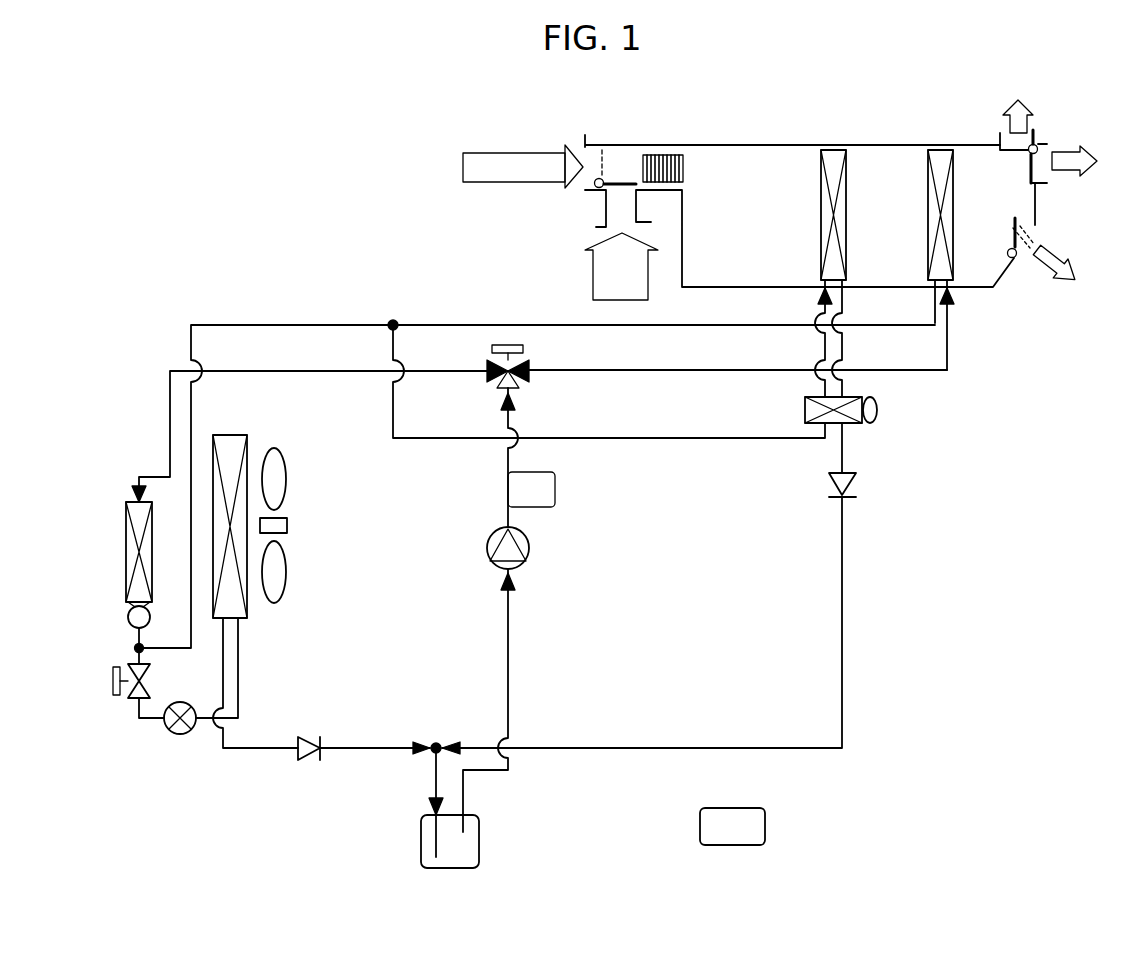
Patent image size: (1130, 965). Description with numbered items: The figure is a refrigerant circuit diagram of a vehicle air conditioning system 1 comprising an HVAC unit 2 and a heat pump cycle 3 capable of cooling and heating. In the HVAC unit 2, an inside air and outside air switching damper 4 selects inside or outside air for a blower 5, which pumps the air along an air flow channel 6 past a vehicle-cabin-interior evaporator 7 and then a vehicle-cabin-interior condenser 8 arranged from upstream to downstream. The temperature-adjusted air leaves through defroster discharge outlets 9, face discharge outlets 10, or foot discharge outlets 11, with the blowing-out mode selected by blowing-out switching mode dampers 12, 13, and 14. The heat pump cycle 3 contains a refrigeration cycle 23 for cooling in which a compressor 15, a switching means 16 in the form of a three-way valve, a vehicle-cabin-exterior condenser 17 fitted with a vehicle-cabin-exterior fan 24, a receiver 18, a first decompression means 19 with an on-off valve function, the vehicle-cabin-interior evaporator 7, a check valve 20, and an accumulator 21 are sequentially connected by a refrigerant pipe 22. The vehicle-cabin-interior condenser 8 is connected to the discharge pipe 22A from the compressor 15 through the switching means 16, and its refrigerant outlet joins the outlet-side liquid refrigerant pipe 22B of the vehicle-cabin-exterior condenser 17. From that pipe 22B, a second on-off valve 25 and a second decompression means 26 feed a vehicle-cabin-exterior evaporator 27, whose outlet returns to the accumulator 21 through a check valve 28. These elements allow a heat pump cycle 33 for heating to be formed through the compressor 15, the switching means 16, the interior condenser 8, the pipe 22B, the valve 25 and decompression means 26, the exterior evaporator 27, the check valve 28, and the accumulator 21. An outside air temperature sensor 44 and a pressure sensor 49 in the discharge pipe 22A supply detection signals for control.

The vehicle air conditioning system 1 is at (371, 181).
The heating ventilation and air conditioning unit 2 is at (783, 140).
The heat pump cycle 3 is at (439, 301).
The inside air and outside air switching damper 4 is at (623, 180).
The blower 5 is at (662, 155).
The air flow channel 6 is at (744, 245).
The vehicle-cabin-interior evaporator 7 is at (821, 188).
The vehicle-cabin-interior condenser 8 is at (928, 188).
The defroster discharge outlet 9 is at (1038, 142).
The face discharge outlet 10 is at (1047, 150).
The foot discharge outlet 11 is at (1030, 262).
The blowing-out switching mode damper 12 is at (1005, 141).
The blowing-out switching mode damper 13 is at (1040, 178).
The blowing-out switching mode damper 14 is at (1027, 232).
The compressor 15 is at (530, 548).
The switching means 16 is at (525, 349).
The vehicle-cabin-exterior condenser 17 is at (126, 553).
The receiver 18 is at (126, 616).
The first decompression means with an on-off valve function 19 is at (805, 410).
The check valve 20 is at (829, 488).
The accumulator 21 is at (449, 872).
The refrigerant pipe 22 is at (338, 372).
The discharge pipe 22A is at (512, 418).
The outlet-side liquid refrigerant pipe 22B is at (191, 403).
The refrigeration cycle for cooling 23 is at (598, 755).
The vehicle-cabin-exterior fan 24 is at (288, 580).
The second on-off valve 25 is at (113, 683).
The second decompression means with an on-off valve function 26 is at (167, 728).
The vehicle-cabin-exterior evaporator 27 is at (248, 610).
The check valve 28 is at (306, 735).
The heat pump cycle for heating 33 is at (363, 755).
The outside air temperature sensor 44 is at (700, 827).
The pressure sensor 49 is at (556, 490).